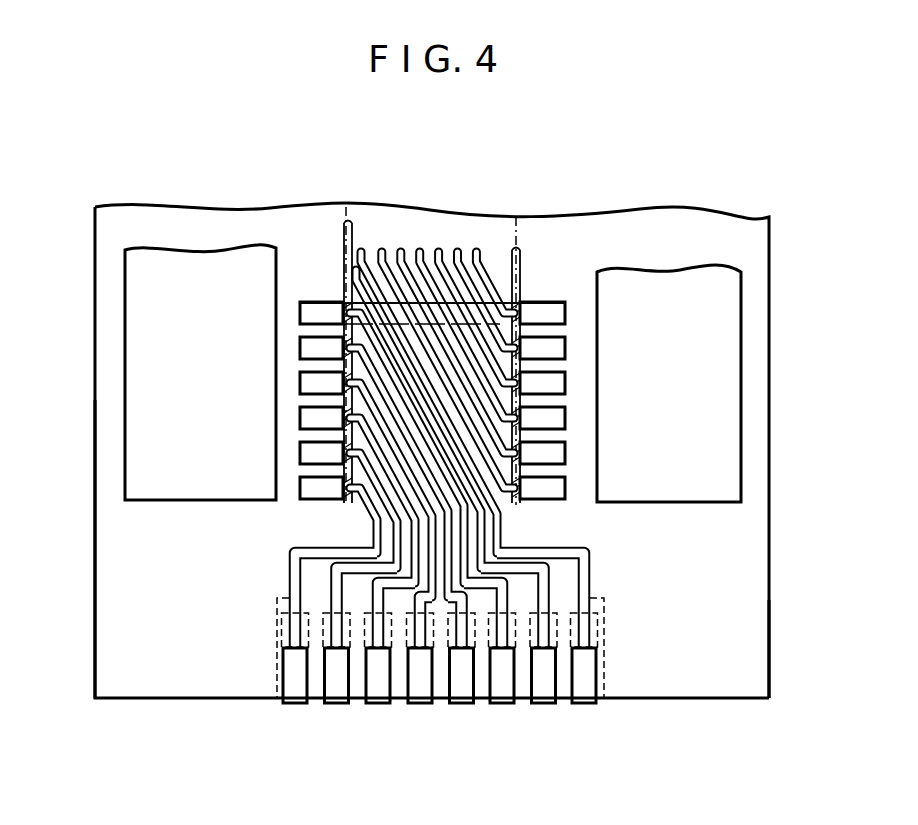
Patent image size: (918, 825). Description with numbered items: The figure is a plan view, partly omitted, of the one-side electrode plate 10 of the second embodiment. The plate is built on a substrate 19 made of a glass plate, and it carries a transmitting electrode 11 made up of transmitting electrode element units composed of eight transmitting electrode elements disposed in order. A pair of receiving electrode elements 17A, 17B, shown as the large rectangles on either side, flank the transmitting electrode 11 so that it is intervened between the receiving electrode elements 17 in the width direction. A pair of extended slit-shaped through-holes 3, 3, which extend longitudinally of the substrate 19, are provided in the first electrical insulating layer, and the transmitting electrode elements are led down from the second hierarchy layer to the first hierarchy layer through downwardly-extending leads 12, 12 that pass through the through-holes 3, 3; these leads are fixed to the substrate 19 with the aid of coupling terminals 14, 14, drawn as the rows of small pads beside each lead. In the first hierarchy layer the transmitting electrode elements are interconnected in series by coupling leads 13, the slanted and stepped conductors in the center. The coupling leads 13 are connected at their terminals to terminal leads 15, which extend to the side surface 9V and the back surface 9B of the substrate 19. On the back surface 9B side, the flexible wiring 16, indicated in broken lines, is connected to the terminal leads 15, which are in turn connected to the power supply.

The slit-shaped through-hole 3 is at (352, 224).
The back surface 9B is at (745, 667).
The side surface 9V is at (730, 700).
The one-side electrode plate 10 is at (163, 735).
The transmitting electrode 11 is at (534, 308).
The downwardly-extending lead 12 is at (346, 503).
The coupling lead 13 is at (456, 249).
The coupling terminal 14 is at (314, 500).
The terminal lead 15 is at (546, 696).
The flexible wiring 16 is at (603, 660).
The receiving electrode element 17 is at (430, 373).
The receiving electrode element 17A is at (136, 366).
The receiving electrode element 17B is at (727, 382).
The substrate 19 is at (102, 603).